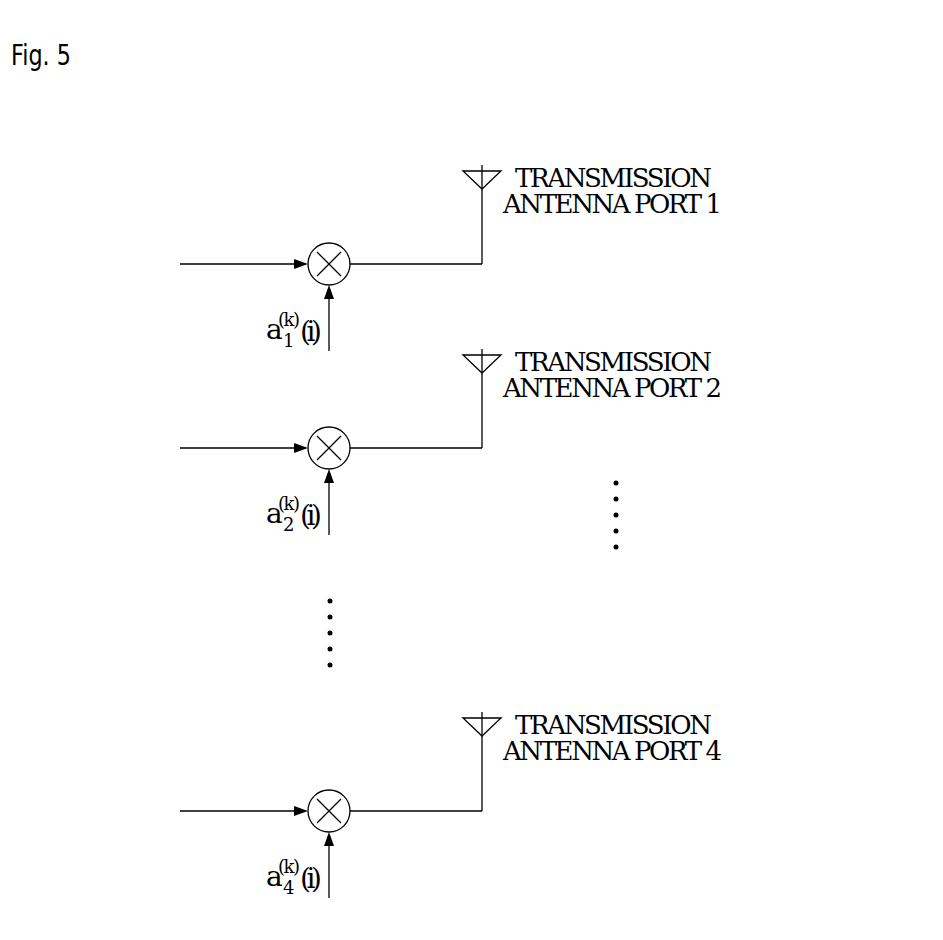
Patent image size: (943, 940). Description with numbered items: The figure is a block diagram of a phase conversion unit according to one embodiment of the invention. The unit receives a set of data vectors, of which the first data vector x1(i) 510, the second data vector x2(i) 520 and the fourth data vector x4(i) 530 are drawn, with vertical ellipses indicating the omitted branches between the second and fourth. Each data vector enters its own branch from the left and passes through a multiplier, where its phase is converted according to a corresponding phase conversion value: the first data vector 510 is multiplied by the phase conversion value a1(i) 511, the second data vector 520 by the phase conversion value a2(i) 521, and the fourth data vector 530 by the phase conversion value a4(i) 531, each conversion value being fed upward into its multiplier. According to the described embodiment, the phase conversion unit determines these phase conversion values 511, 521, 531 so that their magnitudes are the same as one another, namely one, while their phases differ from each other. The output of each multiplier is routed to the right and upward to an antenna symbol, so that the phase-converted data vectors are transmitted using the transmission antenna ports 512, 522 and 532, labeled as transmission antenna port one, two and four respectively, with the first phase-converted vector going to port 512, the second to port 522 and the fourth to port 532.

The data vector x1(i) 510 is at (117, 265).
The phase conversion value a1(i) 511 is at (331, 243).
The transmission antenna port 512 is at (482, 165).
The data vector x2(i) 520 is at (97, 450).
The phase conversion value a2(i) 521 is at (343, 416).
The transmission antenna port 522 is at (497, 370).
The data vector x4(i) 530 is at (97, 813).
The phase conversion value a4(i) 531 is at (343, 779).
The transmission antenna port 532 is at (497, 733).